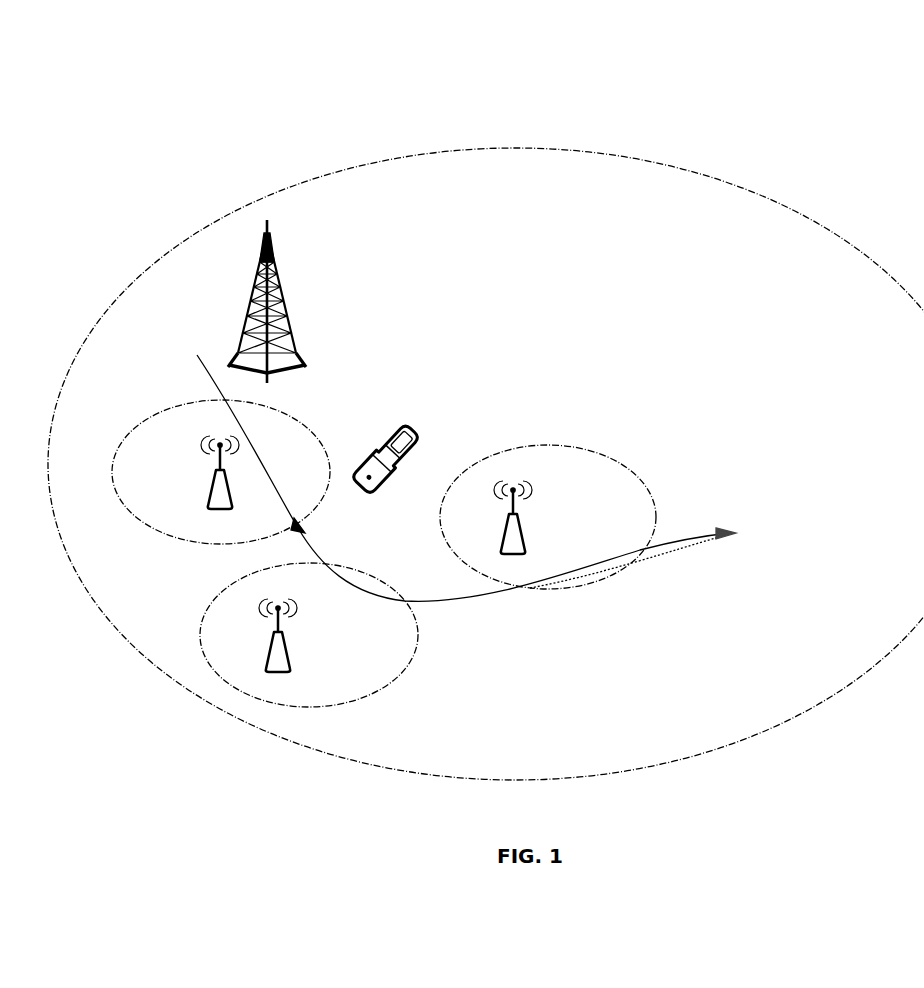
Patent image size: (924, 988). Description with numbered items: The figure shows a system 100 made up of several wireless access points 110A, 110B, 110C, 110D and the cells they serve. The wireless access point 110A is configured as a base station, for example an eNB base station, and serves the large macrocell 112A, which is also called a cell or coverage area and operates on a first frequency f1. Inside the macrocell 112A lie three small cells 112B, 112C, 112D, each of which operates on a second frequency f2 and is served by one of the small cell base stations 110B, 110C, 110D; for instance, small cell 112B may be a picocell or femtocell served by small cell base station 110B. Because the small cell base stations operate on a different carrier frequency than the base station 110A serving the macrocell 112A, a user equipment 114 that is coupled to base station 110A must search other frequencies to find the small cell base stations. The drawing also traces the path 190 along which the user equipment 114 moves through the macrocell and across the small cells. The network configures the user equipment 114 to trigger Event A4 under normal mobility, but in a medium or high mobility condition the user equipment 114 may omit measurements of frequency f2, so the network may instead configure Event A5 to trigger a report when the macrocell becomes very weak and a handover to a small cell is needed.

The system 100 is at (453, 33).
The wireless access point 110A is at (290, 294).
The small cell base station 110B is at (213, 483).
The small cell base station 110C is at (523, 527).
The small cell base station 110D is at (270, 638).
The macrocell 112A is at (412, 163).
The small cell 112B is at (133, 519).
The small cell 112C is at (582, 449).
The small cell 112D is at (371, 694).
The user equipment 114 is at (414, 438).
The UE path 190 is at (445, 604).